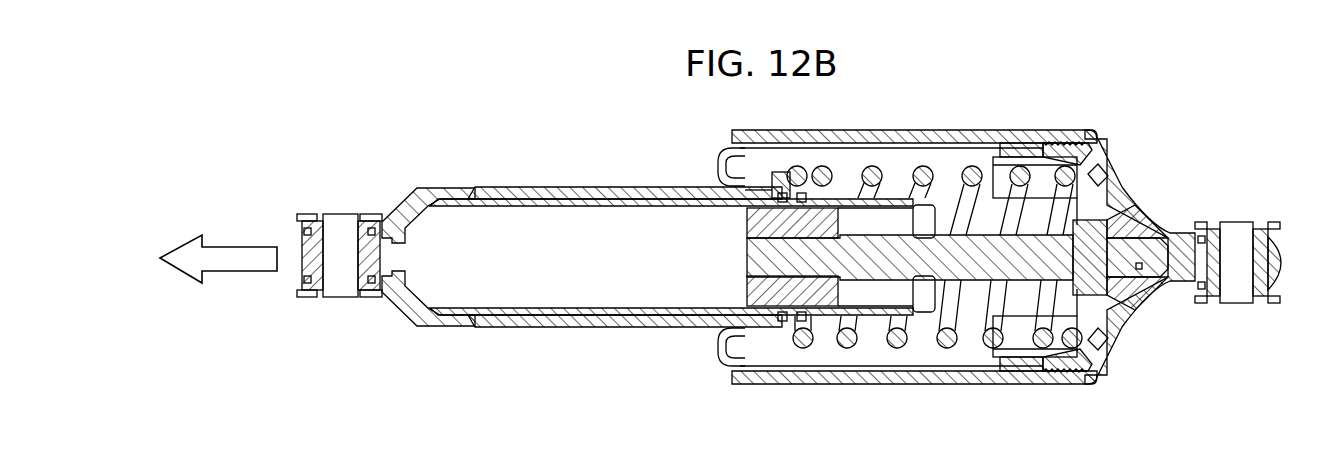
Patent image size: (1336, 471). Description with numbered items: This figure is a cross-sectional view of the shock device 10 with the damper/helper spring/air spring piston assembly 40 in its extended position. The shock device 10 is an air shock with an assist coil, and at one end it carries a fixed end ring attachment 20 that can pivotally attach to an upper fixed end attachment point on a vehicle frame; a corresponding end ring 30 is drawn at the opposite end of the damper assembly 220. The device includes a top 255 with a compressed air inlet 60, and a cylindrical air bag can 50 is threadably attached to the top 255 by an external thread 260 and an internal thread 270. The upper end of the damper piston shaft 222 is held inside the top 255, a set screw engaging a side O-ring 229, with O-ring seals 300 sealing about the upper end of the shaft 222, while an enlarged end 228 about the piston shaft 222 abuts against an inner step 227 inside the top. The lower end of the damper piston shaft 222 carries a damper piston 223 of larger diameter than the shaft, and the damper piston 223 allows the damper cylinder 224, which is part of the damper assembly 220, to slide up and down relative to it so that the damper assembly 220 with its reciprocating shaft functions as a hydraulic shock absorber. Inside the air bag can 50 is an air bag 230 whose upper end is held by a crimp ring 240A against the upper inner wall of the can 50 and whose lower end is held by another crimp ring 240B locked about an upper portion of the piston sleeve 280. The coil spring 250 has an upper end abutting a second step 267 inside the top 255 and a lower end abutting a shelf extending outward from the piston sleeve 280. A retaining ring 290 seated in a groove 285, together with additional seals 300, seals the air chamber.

The shock device 10 is at (947, 254).
The fixed end ring attachment 20 is at (1257, 238).
The lower mounting bushing 30 is at (320, 224).
The damper/helper spring/air spring piston assembly 40 is at (640, 303).
The air bag can 50 is at (716, 290).
The compressed air inlet 60 is at (1088, 100).
The damper assembly 220 is at (418, 330).
The damper piston shaft 222 is at (910, 184).
The damper piston 223 is at (743, 223).
The damper cylinder 224 is at (640, 225).
The inner step 227 is at (1136, 298).
The enlarged end 228 is at (1172, 245).
The side O-ring 229 is at (1197, 285).
The air bag 230 is at (914, 291).
The crimp ring 240A is at (1080, 405).
The crimp ring 240B is at (724, 151).
The coil spring 250 is at (934, 295).
The top 255 is at (1173, 189).
The external thread 260 is at (1082, 270).
The second step 267 is at (1153, 215).
The internal thread 270 is at (1103, 386).
The piston sleeve 280 is at (625, 283).
The groove 285 is at (961, 206).
The retaining ring 290 is at (953, 154).
The O-ring seals 300 is at (805, 325).